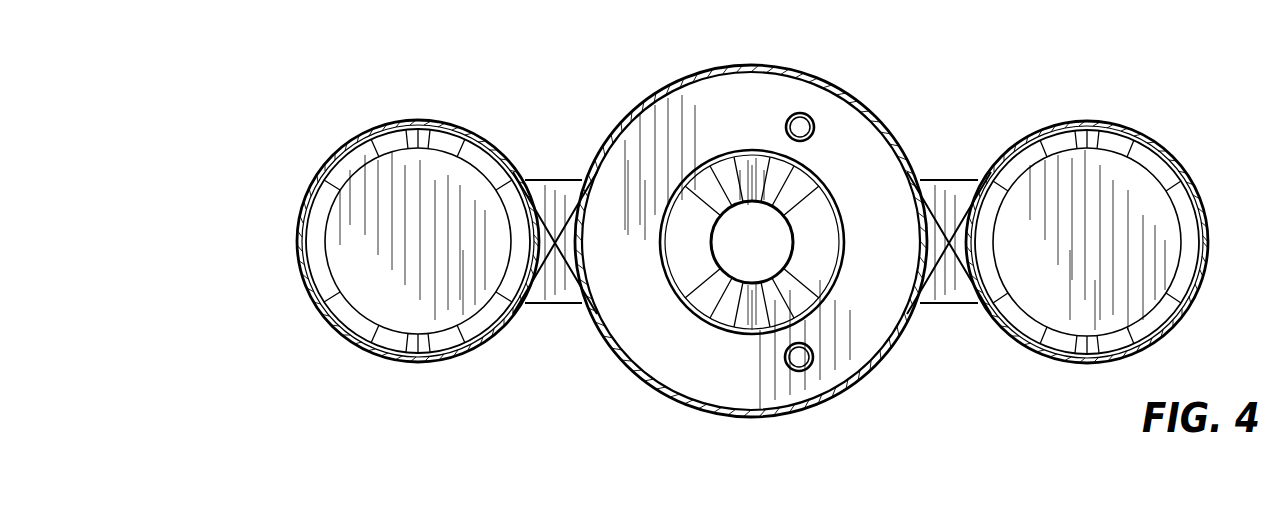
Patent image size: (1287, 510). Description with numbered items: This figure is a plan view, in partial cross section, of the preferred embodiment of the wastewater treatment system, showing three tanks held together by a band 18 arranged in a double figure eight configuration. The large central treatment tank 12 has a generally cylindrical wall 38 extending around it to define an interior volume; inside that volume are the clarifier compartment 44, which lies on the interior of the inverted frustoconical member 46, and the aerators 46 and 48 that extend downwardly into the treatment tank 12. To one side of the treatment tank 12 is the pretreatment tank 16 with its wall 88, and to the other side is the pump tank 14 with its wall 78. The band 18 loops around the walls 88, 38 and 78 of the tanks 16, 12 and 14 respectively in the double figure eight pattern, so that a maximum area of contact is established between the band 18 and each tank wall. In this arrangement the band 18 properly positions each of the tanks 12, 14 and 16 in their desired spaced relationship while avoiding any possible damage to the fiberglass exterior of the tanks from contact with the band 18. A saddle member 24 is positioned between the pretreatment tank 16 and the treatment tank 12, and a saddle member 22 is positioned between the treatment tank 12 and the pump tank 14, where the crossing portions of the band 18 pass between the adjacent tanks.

The treatment tank 12 is at (680, 373).
The pump tank 14 is at (1153, 331).
The pretreatment tank 16 is at (437, 330).
The band 18 is at (887, 125).
The saddle member 22 is at (938, 180).
The saddle member 24 is at (545, 178).
The wall 38 is at (813, 75).
The clarifier compartment 44 is at (752, 242).
The aerator 46 is at (806, 140).
The aerator 48 is at (807, 345).
The wall 78 is at (1155, 138).
The wall 88 is at (462, 132).